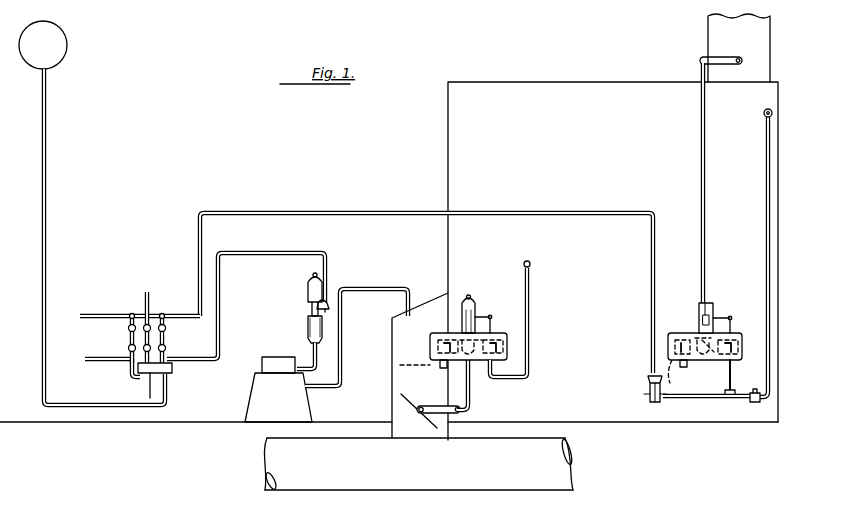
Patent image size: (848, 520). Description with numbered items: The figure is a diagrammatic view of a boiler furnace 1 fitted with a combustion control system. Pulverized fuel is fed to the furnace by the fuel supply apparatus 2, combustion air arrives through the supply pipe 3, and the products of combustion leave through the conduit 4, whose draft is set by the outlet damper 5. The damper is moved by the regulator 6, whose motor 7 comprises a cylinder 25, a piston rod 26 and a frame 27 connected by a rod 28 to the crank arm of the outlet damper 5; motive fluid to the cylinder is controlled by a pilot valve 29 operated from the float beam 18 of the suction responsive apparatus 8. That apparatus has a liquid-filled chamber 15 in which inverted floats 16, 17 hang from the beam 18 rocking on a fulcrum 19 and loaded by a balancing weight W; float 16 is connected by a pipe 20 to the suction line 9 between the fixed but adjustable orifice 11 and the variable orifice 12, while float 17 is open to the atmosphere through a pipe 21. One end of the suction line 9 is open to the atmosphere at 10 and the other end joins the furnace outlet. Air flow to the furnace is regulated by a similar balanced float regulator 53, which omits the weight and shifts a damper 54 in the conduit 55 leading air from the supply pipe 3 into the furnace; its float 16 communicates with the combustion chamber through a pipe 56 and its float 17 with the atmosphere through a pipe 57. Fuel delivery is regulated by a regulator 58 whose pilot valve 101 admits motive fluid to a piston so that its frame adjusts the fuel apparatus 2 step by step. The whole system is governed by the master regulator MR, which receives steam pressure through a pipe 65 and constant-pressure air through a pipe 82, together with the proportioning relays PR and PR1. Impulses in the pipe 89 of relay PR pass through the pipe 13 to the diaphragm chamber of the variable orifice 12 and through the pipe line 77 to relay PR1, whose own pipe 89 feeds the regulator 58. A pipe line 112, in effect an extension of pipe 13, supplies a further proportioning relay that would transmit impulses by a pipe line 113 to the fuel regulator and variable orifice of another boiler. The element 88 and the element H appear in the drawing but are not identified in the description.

The boiler furnace 1 is at (613, 261).
The fuel supply apparatus 2 is at (326, 355).
The air supply pipe 3 is at (419, 464).
The conduit 4 is at (748, 68).
The outlet damper 5 is at (748, 68).
The regulator 6 is at (706, 332).
The motor 7 is at (724, 306).
The suction responsive apparatus 8 is at (711, 360).
The suction line 9 is at (765, 228).
The atmospheric opening 10 is at (642, 400).
The fixed but adjustable orifice 11 is at (756, 402).
The variable orifice 12 is at (690, 387).
The pipe 13 is at (370, 210).
The chamber 15 is at (737, 360).
The inverted float 16 is at (507, 350).
The inverted float 17 is at (430, 346).
The float beam 18 is at (747, 338).
The fulcrum 19 is at (716, 357).
The pipe 20 is at (728, 378).
The pipe 21 is at (684, 368).
The cylinder 25 is at (735, 326).
The piston rod 26 is at (710, 300).
The frame 27 is at (703, 300).
The rod 28 is at (700, 198).
The pilot valve 29 is at (703, 323).
The balanced float regulator 53 is at (483, 311).
The damper 54 is at (405, 398).
The conduit 55 is at (392, 377).
The pipe 56 is at (529, 318).
The pipe 57 is at (441, 369).
The fuel regulator 58 is at (303, 321).
The steam pressure pipe 65 is at (110, 404).
The pipe line 77 is at (130, 371).
The pipe 82 is at (168, 398).
The pipe 88 is at (165, 338).
The pipe 89 is at (221, 332).
The pilot valve 101 is at (326, 318).
The pipe line 112 is at (100, 314).
The pipe line 113 is at (108, 356).
The hand wheel H is at (60, 53).
The balancing weight W is at (684, 340).
The proportioning relay PR is at (147, 316).
The proportioning relay PR1 is at (195, 340).
The master regulator MR is at (175, 377).